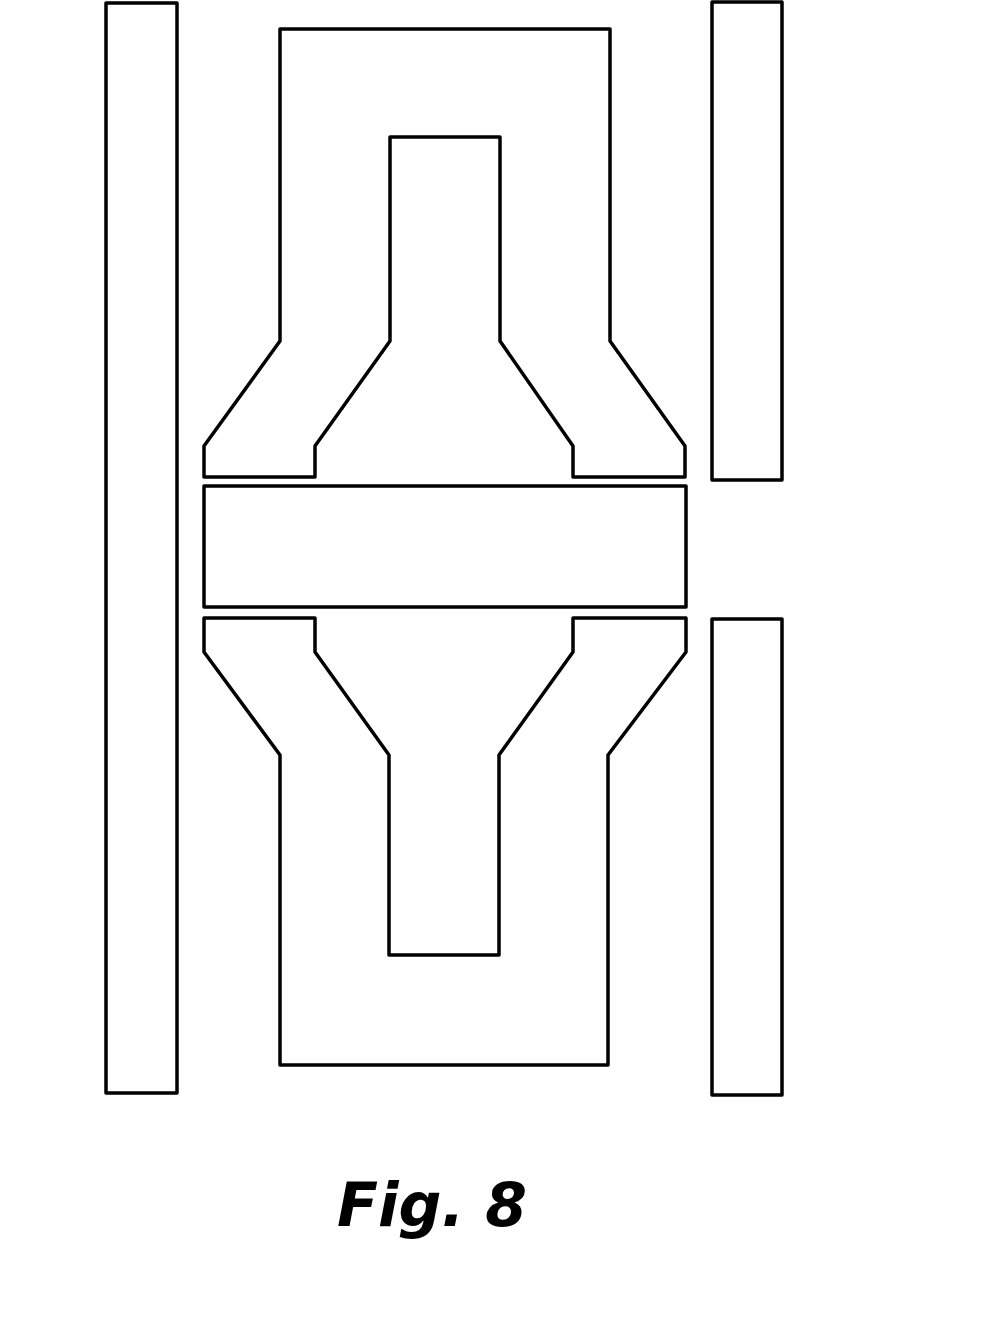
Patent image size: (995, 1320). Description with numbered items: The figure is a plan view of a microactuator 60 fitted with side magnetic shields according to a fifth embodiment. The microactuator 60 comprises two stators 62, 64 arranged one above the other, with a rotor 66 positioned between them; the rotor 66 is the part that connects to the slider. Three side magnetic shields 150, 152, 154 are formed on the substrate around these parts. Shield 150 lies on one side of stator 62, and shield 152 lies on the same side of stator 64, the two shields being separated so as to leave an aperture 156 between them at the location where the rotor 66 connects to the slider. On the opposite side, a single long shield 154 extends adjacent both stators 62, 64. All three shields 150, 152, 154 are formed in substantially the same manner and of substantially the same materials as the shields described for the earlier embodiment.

The microactuator 60 is at (266, 815).
The stator 62 is at (612, 180).
The stator 64 is at (610, 866).
The rotor 66 is at (400, 486).
The side magnetic shield 150 is at (783, 302).
The side magnetic shield 152 is at (783, 803).
The side magnetic shield 154 is at (112, 540).
The aperture 156 is at (780, 560).